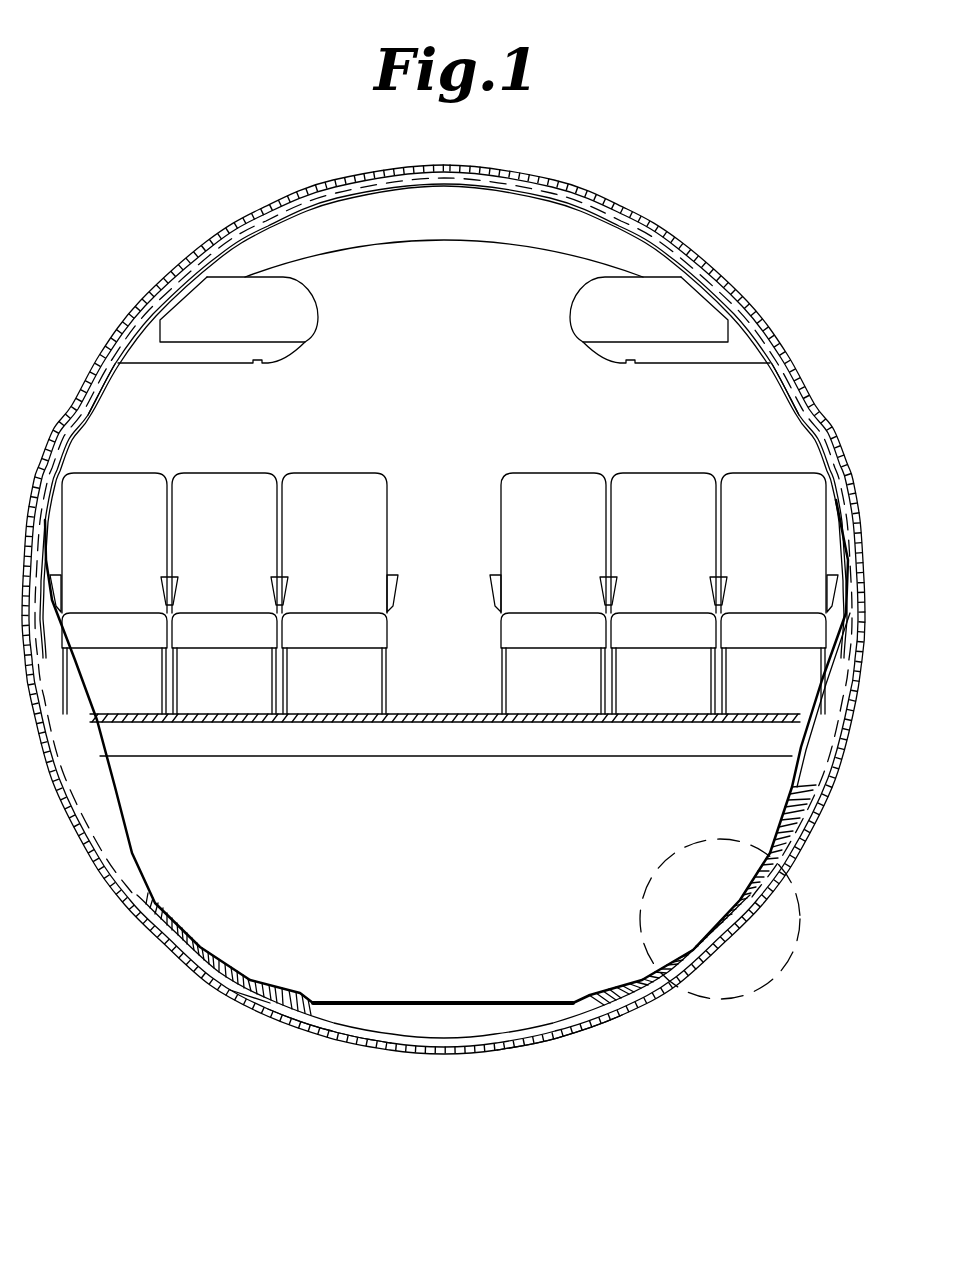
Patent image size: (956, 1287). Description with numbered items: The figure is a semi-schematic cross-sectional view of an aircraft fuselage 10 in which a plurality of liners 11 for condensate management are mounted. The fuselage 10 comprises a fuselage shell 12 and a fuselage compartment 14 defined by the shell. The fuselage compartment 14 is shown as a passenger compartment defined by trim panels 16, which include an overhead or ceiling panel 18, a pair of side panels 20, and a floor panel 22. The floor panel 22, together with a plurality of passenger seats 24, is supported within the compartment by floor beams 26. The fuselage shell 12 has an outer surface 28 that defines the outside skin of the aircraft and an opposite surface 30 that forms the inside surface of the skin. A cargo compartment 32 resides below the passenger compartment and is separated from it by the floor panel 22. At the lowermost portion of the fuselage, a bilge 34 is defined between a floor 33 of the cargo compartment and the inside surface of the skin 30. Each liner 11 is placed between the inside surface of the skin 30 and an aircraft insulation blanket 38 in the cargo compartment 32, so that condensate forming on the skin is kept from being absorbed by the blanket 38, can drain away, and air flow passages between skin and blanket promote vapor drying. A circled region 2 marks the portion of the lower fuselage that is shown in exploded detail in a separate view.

The exploded view portion 2 is at (720, 925).
The aircraft fuselage 10 is at (238, 208).
The liner 11 is at (248, 1013).
The fuselage shell 12 is at (142, 300).
The fuselage compartment 14 is at (449, 424).
The trim panels 16 is at (422, 247).
The ceiling panel 18 is at (488, 248).
The side panels 20 is at (95, 392).
The floor panel 22 is at (462, 714).
The passenger seats 24 is at (348, 472).
The floor beams 26 is at (466, 758).
The outside surface of the skin 28 is at (563, 1033).
The inside surface of the skin 30 is at (337, 1037).
The cargo compartment 32 is at (479, 898).
The floor of the cargo compartment 33 is at (473, 1002).
The bilge 34 is at (447, 1033).
The aircraft insulation blanket 38 is at (183, 930).